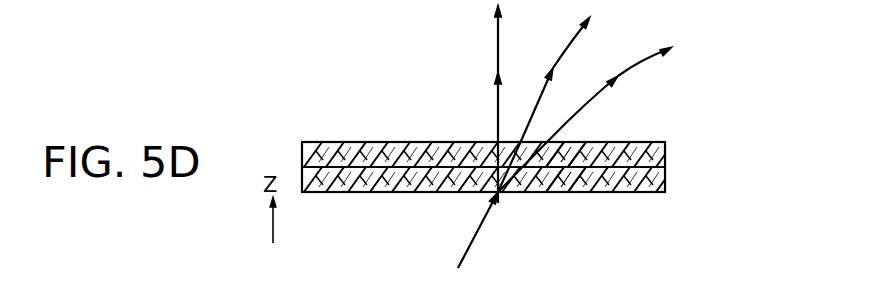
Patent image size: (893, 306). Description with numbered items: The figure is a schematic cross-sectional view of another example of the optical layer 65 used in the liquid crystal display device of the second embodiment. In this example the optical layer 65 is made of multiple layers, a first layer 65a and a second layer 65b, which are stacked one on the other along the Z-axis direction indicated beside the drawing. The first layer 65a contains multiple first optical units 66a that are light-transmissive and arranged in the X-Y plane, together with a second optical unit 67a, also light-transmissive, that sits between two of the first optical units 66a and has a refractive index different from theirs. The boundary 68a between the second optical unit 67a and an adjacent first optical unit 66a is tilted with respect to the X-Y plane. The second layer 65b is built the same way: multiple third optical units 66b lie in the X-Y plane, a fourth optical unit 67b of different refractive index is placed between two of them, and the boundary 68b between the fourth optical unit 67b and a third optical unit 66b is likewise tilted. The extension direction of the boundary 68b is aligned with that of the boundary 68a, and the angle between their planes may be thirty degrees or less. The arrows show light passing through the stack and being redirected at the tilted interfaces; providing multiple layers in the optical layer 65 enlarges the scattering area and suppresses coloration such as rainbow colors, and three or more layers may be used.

The optical layer 65 is at (547, 179).
The first layer 65a is at (529, 164).
The second layer 65b is at (529, 215).
The first optical units 66a is at (560, 146).
The second optical unit 67a is at (575, 146).
The boundary 68a is at (575, 154).
The third optical units 66b is at (553, 183).
The fourth optical unit 67b is at (577, 183).
The boundary 68b is at (572, 183).